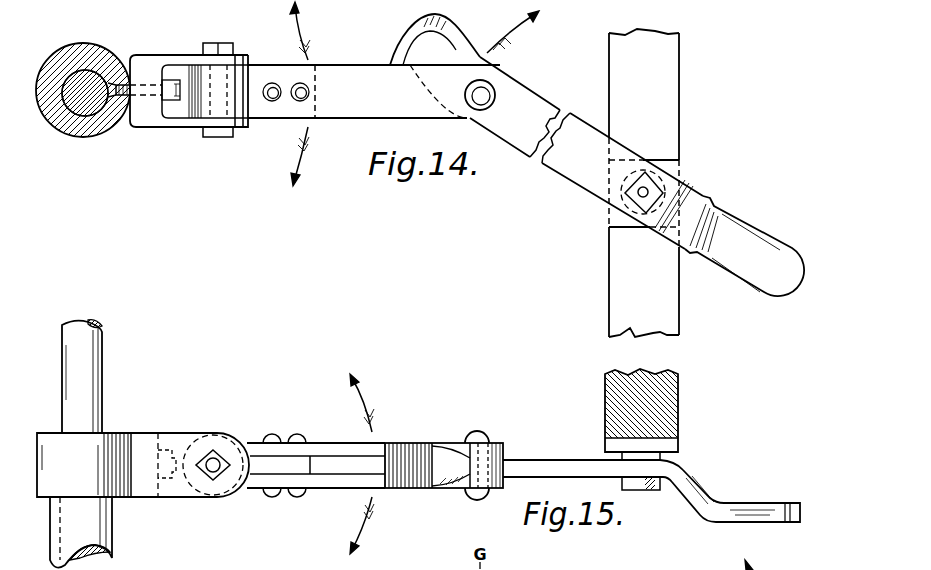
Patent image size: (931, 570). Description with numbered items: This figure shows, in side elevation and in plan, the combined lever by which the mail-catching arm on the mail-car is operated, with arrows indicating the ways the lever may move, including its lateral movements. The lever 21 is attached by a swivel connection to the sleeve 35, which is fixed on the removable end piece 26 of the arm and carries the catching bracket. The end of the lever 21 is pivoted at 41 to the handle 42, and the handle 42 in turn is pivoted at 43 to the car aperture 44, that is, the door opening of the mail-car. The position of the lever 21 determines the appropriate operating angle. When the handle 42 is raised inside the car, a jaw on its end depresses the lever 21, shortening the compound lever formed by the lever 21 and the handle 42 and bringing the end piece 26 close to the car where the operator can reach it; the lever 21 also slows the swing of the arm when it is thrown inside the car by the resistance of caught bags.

In FIG. 14, the lever 21 is at (350, 75).
In FIG. 15, the lever 21 is at (333, 442).
In FIG. 14, the removable end piece 26 is at (88, 110).
In FIG. 15, the removable end piece 26 is at (87, 420).
In FIG. 14, the sleeve 35 is at (73, 47).
In FIG. 15, the sleeve 35 is at (127, 478).
In FIG. 14, the pivot 41 is at (488, 92).
In FIG. 15, the pivot 41 is at (480, 440).
In FIG. 14, the handle 42 is at (583, 177).
In FIG. 15, the handle 42 is at (557, 460).
In FIG. 14, the pivot 43 is at (657, 185).
In FIG. 15, the pivot 43 is at (641, 490).
In FIG. 14, the car aperture 44 is at (610, 267).
In FIG. 15, the car aperture 44 is at (675, 447).